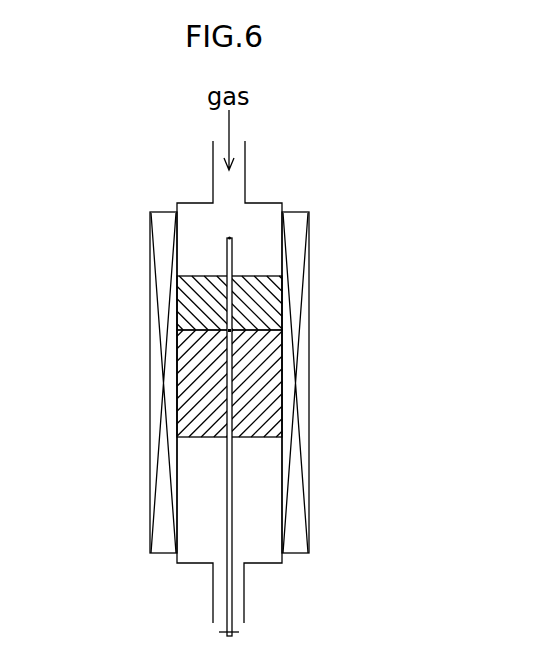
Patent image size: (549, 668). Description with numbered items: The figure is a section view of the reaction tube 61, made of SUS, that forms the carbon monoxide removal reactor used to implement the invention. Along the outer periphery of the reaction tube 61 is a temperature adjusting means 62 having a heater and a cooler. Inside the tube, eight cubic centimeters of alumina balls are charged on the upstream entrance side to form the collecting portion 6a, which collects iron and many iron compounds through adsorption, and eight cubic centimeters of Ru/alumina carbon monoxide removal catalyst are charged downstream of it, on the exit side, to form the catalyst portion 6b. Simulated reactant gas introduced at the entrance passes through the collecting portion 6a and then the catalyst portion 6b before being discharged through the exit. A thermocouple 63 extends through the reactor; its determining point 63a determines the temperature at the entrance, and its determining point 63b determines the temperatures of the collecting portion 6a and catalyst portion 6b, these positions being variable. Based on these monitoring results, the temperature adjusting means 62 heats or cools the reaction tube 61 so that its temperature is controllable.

The reaction tube 61 is at (262, 565).
The temperature adjusting means 62 is at (150, 272).
The thermocouple 63 is at (232, 470).
The determining point 63a is at (230, 236).
The determining point 63b is at (232, 332).
The collecting portion 6a is at (265, 300).
The catalyst portion 6b is at (183, 382).